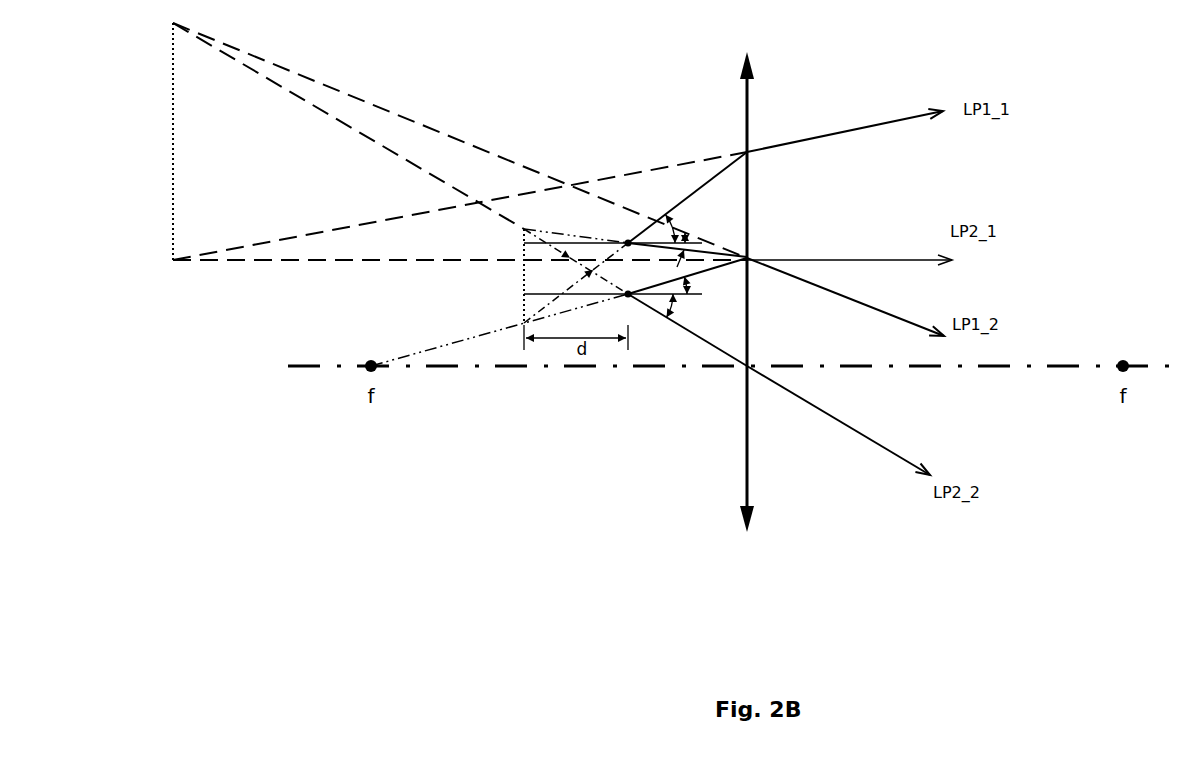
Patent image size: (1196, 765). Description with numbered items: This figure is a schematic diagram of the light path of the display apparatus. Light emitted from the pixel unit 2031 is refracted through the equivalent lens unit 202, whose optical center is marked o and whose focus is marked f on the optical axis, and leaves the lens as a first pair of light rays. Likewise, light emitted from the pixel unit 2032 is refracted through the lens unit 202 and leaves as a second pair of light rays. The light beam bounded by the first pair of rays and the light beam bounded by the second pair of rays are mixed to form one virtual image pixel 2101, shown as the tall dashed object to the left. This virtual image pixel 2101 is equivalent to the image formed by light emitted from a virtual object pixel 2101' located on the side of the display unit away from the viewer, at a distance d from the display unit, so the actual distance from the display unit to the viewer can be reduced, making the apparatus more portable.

The equivalent lens unit 202 is at (749, 475).
The virtual image pixel 2101 is at (412, 141).
The virtual object pixel 2101' is at (499, 297).
The pixel unit 2031 is at (628, 240).
The pixel unit 2032 is at (628, 297).